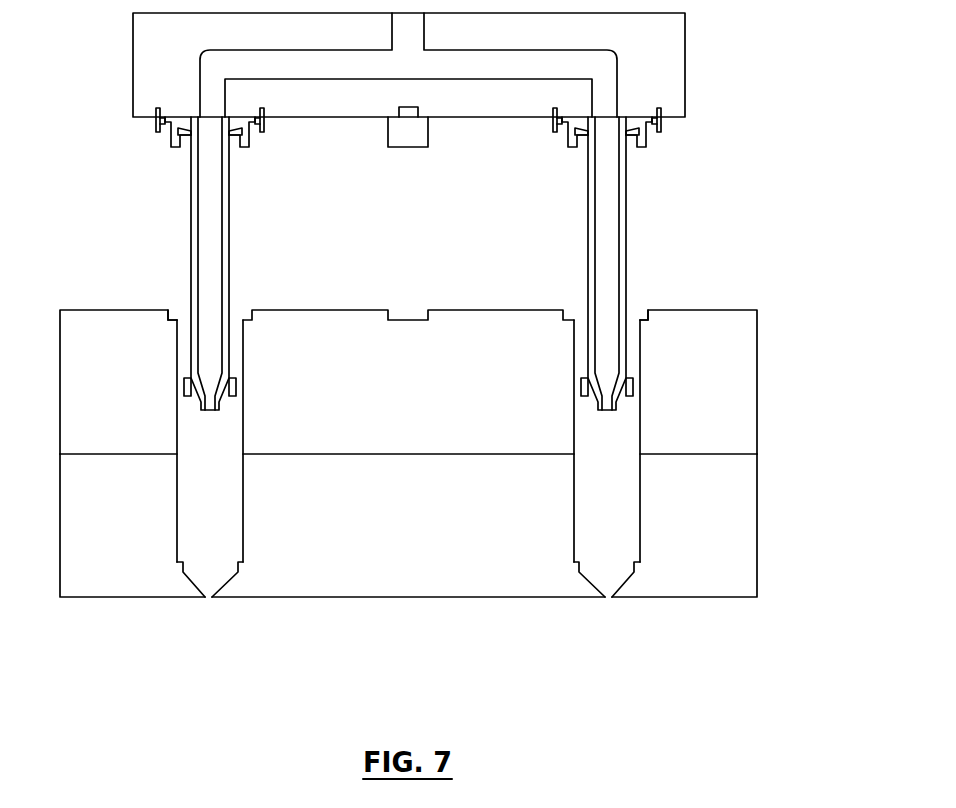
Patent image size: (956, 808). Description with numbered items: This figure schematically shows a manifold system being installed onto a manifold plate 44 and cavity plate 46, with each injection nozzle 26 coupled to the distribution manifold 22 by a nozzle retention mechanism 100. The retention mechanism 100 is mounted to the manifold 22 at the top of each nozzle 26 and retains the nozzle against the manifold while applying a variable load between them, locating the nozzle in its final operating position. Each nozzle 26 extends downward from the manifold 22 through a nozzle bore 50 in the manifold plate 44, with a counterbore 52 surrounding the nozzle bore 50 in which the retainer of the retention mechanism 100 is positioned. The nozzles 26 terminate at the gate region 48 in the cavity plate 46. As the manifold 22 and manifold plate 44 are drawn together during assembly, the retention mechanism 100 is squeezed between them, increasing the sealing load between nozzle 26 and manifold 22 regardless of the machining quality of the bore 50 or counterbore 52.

The distribution manifold 22 is at (685, 60).
The nozzle retention mechanism 100 is at (152, 162).
The injection nozzle 26 is at (231, 208).
The manifold plate 44 is at (757, 388).
The cavity plate 46 is at (757, 528).
The counterbore 52 is at (175, 316).
The nozzle bore 50 is at (227, 435).
The gate region 48 is at (195, 583).